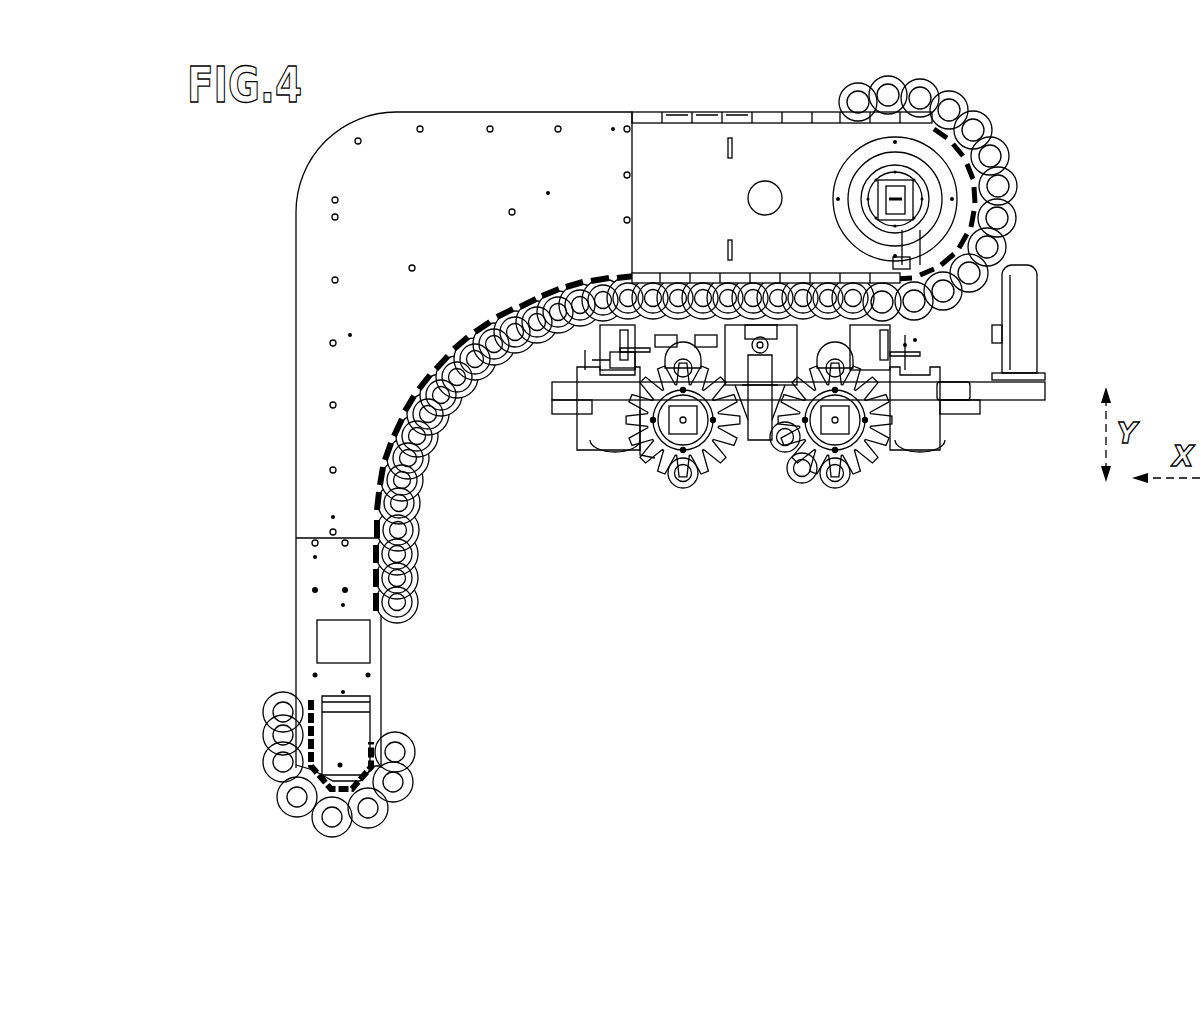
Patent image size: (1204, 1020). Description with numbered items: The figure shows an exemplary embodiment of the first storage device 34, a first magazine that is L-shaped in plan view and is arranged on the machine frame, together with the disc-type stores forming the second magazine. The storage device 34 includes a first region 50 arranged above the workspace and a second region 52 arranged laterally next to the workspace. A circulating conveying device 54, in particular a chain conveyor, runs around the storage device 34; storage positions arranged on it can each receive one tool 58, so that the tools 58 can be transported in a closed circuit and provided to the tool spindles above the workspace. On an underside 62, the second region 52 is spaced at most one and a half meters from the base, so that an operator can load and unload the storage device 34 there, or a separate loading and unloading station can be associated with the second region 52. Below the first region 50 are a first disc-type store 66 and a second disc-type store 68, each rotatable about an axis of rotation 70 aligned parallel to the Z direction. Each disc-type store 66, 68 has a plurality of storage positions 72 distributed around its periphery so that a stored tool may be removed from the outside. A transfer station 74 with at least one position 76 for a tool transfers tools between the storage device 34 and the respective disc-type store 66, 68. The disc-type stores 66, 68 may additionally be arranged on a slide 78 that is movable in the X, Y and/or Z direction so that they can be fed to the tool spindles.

The first storage device 34 is at (745, 70).
The first region 50 is at (828, 155).
The second region 52 is at (325, 498).
The circulating conveying device 54 is at (385, 758).
The tool 58 is at (413, 604).
The underside 62 is at (360, 804).
The first disc-type store 66 is at (637, 447).
The second disc-type store 68 is at (873, 457).
The axis of rotation 70 is at (690, 430).
The storage position 72 is at (650, 458).
The transfer station 74 is at (672, 335).
The position 76 is at (706, 335).
The slide 78 is at (752, 440).